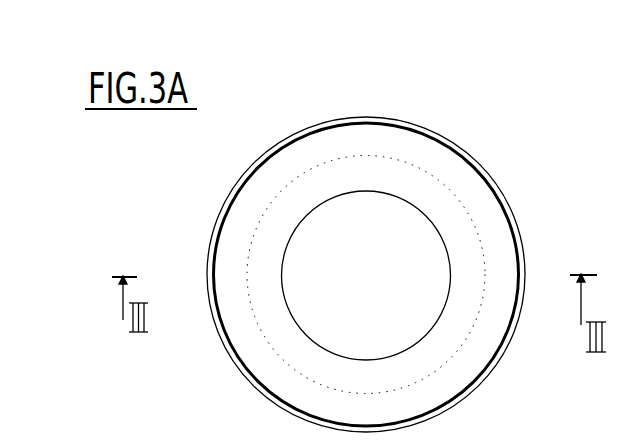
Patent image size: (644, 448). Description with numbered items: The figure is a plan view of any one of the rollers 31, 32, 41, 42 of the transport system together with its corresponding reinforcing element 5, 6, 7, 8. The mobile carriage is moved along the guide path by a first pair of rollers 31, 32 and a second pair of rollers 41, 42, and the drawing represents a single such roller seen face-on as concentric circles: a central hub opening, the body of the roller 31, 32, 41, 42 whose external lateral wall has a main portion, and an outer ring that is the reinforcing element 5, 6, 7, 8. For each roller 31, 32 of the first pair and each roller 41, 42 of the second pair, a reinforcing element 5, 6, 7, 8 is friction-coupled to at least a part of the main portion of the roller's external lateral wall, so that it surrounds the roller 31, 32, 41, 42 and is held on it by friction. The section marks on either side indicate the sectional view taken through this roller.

The reinforcing element 5 is at (347, 216).
The reinforcing element 6 is at (347, 216).
The reinforcing element 7 is at (347, 216).
The reinforcing element 8 is at (299, 133).
The roller 31 is at (420, 216).
The roller 32 is at (420, 216).
The roller 41 is at (420, 216).
The roller 42 is at (442, 192).